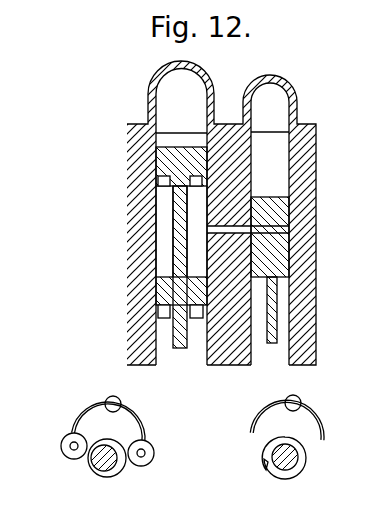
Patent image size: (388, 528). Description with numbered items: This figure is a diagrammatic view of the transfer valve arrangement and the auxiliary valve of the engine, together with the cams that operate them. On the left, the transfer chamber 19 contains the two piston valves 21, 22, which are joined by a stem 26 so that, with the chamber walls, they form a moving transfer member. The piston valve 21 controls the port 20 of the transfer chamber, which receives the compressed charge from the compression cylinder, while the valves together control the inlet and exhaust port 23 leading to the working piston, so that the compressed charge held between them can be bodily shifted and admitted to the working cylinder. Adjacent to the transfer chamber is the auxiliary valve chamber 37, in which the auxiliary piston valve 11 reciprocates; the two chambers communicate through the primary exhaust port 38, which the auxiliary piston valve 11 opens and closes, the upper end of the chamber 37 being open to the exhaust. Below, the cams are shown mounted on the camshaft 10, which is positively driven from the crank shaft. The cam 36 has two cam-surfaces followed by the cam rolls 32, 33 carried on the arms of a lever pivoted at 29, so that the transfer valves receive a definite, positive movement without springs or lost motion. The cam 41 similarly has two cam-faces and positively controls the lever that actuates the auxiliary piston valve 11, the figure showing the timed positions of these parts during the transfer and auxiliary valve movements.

The piston valve 22 is at (160, 160).
The inlet and exhaust port 23 is at (160, 190).
The stem 26 is at (176, 212).
The transfer chamber 19 is at (165, 229).
The piston valve 21 is at (160, 292).
The port 20 is at (164, 313).
The auxiliary valve chamber 37 is at (276, 167).
The primary exhaust port 38 is at (278, 233).
The auxiliary piston valve 11 is at (282, 262).
The pivot 29 is at (108, 398).
The cam roll 33 is at (67, 452).
The cam roll 32 is at (148, 456).
The cam 36 is at (120, 456).
The cam 41 is at (277, 472).
The camshaft 10 is at (104, 464).